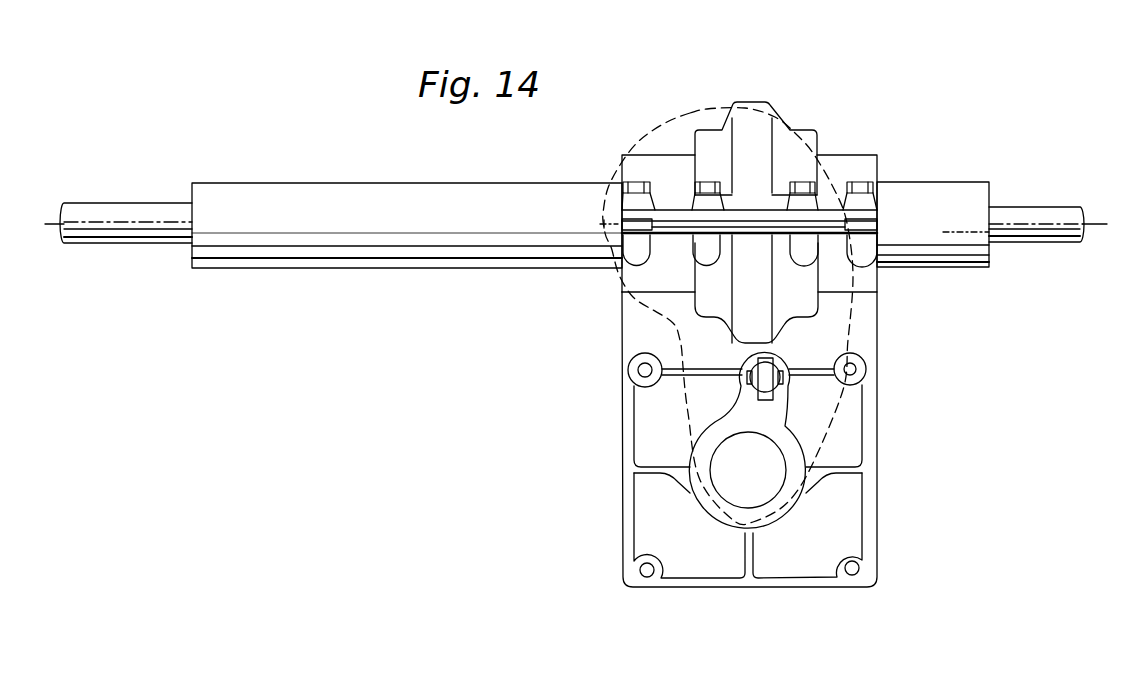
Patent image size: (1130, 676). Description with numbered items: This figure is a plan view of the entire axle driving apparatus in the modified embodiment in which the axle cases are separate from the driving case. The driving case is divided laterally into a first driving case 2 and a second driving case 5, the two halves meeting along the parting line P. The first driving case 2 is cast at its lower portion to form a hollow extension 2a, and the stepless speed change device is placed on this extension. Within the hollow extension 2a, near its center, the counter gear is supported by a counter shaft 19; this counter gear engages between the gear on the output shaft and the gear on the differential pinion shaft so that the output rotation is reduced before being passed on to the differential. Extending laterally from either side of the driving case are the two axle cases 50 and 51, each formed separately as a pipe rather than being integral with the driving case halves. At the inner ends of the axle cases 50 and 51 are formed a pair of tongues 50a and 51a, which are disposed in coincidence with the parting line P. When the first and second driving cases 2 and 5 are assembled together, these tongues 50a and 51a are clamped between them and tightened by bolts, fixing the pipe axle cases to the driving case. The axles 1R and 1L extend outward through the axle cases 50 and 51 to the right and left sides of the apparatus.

The right output shaft 1R is at (133, 202).
The left output shaft 1L is at (1031, 207).
The parting line P is at (571, 211).
The axle case 50 is at (468, 182).
The axle case 51 is at (964, 182).
The tongue 50a is at (603, 212).
The tongue 51a is at (878, 224).
The second driving case 5 is at (778, 110).
The first driving case 2 is at (812, 310).
The hollow extension 2a is at (627, 498).
The counter shaft 19 is at (778, 363).